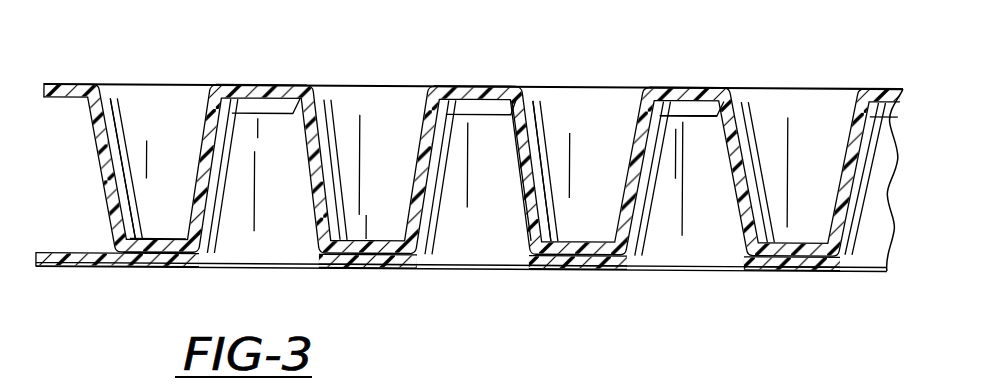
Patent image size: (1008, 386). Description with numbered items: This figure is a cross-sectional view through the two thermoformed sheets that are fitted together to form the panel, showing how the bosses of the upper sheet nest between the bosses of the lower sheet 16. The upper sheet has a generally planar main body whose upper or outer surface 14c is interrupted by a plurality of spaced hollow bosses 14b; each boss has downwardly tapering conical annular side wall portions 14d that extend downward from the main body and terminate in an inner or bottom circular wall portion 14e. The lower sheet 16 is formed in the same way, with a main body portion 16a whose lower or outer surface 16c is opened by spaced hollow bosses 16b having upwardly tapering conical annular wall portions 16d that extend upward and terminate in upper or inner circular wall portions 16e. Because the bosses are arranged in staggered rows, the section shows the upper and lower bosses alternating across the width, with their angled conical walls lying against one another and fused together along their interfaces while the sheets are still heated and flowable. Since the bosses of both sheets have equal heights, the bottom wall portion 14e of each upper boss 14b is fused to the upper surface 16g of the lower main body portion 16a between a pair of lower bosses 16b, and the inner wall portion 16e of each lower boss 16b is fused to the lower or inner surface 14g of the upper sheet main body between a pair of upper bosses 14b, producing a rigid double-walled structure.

The hollow bosses 14b is at (86, 165).
The upper or outer surface 14c is at (293, 84).
The conical annular side wall portions 14d is at (487, 70).
The inner or bottom circular wall portions 14e is at (157, 236).
The lower or inner surface 14g is at (700, 108).
The lower sheet 16 is at (668, 44).
The main body portion 16a is at (364, 280).
The hollow bosses 16b is at (507, 238).
The lower or outer surface 16c is at (573, 267).
The conical annular wall portions 16d is at (518, 170).
The upper or inner circular wall portions 16e is at (683, 104).
The upper surface 16g is at (800, 250).